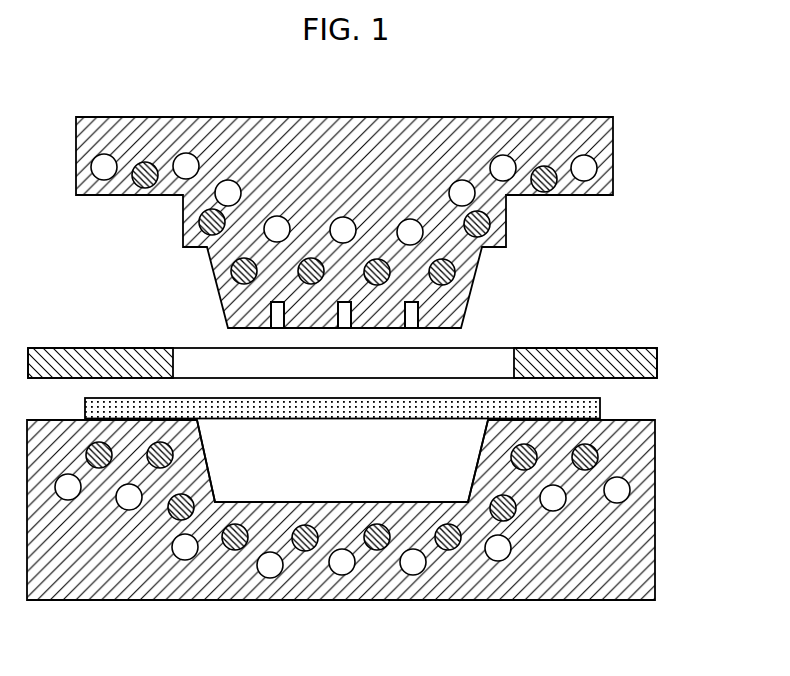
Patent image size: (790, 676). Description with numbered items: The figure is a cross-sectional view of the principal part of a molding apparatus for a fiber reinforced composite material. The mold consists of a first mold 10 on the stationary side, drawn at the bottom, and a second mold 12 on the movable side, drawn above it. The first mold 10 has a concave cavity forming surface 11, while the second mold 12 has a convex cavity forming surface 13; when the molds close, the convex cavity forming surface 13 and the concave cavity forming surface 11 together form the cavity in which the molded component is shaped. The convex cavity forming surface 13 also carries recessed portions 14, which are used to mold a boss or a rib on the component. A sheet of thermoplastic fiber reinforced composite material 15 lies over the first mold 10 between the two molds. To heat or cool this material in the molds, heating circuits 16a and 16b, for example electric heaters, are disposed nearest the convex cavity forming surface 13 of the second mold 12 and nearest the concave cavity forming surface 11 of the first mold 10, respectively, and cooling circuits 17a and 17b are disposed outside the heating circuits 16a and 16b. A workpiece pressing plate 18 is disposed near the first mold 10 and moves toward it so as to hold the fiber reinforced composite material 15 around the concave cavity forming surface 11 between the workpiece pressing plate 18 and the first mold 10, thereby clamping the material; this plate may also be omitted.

The first mold 10 is at (618, 602).
The concave cavity forming surface 11 is at (368, 503).
The second mold 12 is at (576, 117).
The convex cavity forming surface 13 is at (450, 338).
The recessed portions 14 is at (274, 323).
The thermoplastic fiber reinforced composite material 15 is at (600, 408).
The heating circuit 16a is at (448, 274).
The heating circuit 16b is at (452, 543).
The cooling circuit 17a is at (345, 226).
The cooling circuit 17b is at (413, 570).
The workpiece pressing plate 18 is at (657, 365).